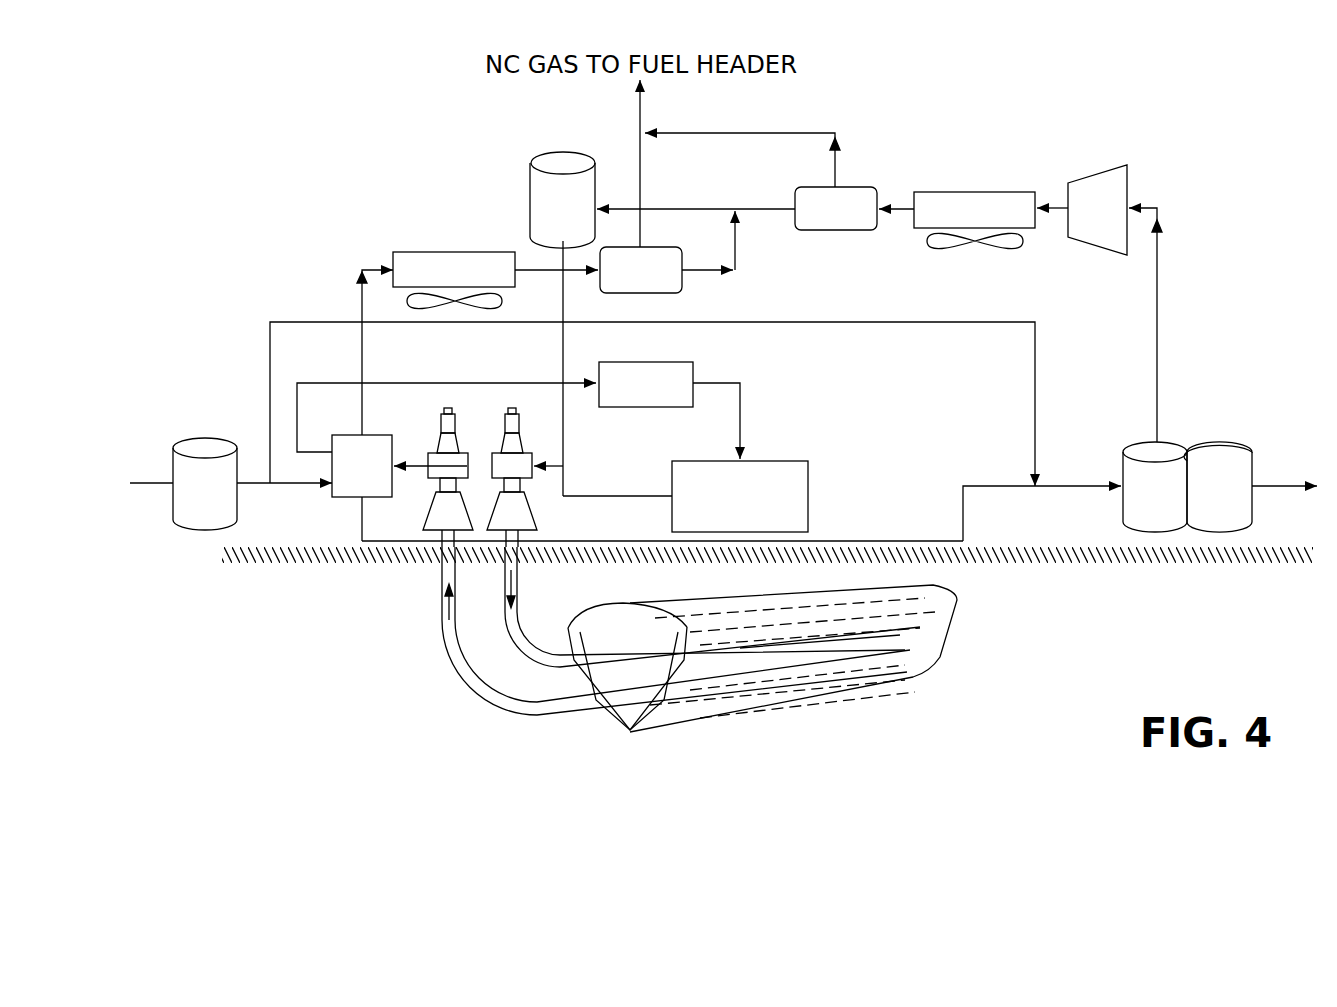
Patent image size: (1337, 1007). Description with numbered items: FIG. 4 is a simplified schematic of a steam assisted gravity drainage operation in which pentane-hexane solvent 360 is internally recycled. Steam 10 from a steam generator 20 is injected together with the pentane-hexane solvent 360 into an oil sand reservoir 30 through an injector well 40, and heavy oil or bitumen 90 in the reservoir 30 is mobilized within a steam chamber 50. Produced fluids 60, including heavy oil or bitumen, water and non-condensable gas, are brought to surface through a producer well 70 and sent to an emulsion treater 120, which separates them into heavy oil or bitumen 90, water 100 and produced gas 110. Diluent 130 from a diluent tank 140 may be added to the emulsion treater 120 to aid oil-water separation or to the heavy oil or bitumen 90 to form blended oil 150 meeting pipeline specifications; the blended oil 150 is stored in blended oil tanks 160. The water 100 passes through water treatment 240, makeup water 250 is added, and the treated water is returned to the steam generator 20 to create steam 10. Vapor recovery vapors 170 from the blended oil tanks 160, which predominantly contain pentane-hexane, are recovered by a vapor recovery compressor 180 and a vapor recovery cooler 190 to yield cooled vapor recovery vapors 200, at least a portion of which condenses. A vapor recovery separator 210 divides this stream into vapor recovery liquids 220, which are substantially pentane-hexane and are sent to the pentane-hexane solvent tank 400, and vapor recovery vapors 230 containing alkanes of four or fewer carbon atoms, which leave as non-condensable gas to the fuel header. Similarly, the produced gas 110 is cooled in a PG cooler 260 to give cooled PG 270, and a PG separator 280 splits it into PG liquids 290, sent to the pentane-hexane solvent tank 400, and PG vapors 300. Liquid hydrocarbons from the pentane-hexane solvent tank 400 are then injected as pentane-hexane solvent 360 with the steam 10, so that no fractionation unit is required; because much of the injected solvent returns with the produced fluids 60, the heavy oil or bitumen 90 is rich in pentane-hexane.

The steam 10 is at (592, 496).
The steam generator 20 is at (725, 512).
The oil sand reservoir 30 is at (1050, 684).
The injector well 40 is at (518, 590).
The steam chamber 50 is at (960, 612).
The produced fluids 60 is at (428, 458).
The producer well 70 is at (442, 580).
The heavy oil or bitumen 90 is at (997, 486).
The water 100 is at (392, 383).
The produced gas 110 is at (362, 357).
The emulsion treater 120 is at (340, 482).
The diluent 130 is at (270, 367).
The diluent tank 140 is at (183, 503).
The blended oil 150 is at (1287, 486).
The blended oil tanks 160 is at (1133, 507).
The vapor recovery vapors 170 is at (1175, 325).
The vapor recovery compressor 180 is at (1075, 224).
The vapor recovery cooler 190 is at (953, 225).
The cooled vapor recovery vapors 200 is at (900, 205).
The vapor recovery separator 210 is at (814, 224).
The vapor recovery liquids 220 is at (752, 209).
The vapor recovery vapors 230 is at (800, 133).
The water treatment 240 is at (624, 400).
The makeup water 250 is at (751, 383).
The PG cooler 260 is at (432, 285).
The cooled PG 270 is at (531, 266).
The PG separator 280 is at (619, 285).
The PG liquids 290 is at (735, 262).
The PG vapors 300 is at (641, 178).
The pentane-hexane solvent 360 is at (563, 355).
The pentane-hexane solvent tank 400 is at (541, 219).